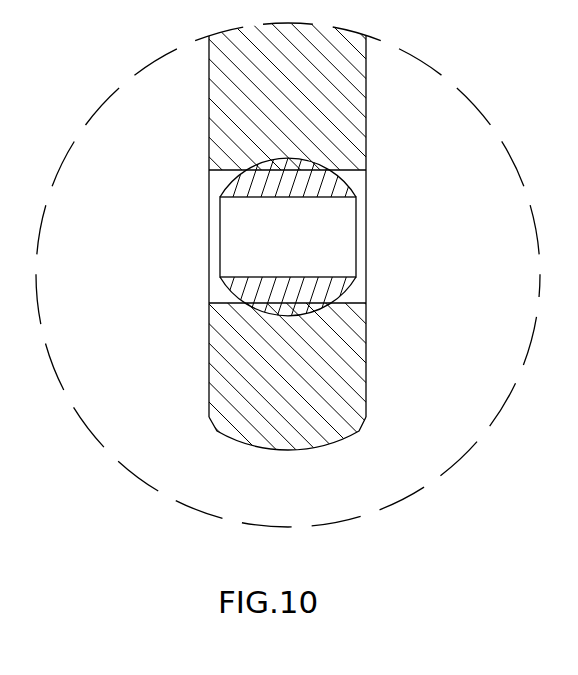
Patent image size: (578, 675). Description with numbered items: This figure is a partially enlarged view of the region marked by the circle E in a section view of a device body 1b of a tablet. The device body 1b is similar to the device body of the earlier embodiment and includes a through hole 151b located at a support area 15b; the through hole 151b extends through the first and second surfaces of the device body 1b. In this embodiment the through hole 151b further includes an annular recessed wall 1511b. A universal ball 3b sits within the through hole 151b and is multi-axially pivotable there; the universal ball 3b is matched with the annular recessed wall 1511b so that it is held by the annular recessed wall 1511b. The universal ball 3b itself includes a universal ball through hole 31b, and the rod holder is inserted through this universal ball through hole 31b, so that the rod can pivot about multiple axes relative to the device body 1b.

The device body 1b is at (290, 230).
The universal ball 3b is at (288, 237).
The universal ball through hole 31b is at (283, 243).
The support area 15b is at (206, 306).
The through hole 151b is at (350, 293).
The annular recessed wall 1511b is at (262, 300).
The circle E is at (483, 112).